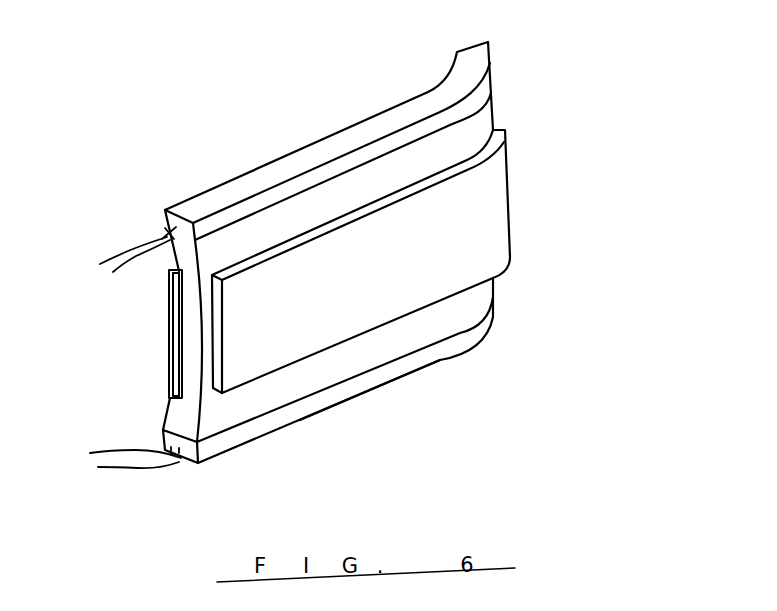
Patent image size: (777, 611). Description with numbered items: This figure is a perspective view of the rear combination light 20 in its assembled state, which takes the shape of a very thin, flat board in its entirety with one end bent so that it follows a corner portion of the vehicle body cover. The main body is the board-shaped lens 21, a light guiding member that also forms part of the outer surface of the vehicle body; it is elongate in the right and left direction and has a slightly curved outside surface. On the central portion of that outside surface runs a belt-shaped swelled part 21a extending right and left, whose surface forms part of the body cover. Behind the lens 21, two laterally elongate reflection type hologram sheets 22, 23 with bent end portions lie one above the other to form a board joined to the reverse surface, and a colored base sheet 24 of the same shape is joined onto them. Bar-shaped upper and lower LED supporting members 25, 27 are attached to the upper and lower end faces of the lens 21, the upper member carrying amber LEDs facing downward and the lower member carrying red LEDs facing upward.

The rear combination light 20 is at (528, 202).
The lens 21 is at (360, 358).
The swelled part 21a is at (465, 255).
The hologram sheet 22 is at (170, 307).
The hologram sheet 23 is at (172, 380).
The colored base sheet 24 is at (176, 333).
The upper LED supporting member 25 is at (318, 153).
The lower LED supporting member 27 is at (348, 403).